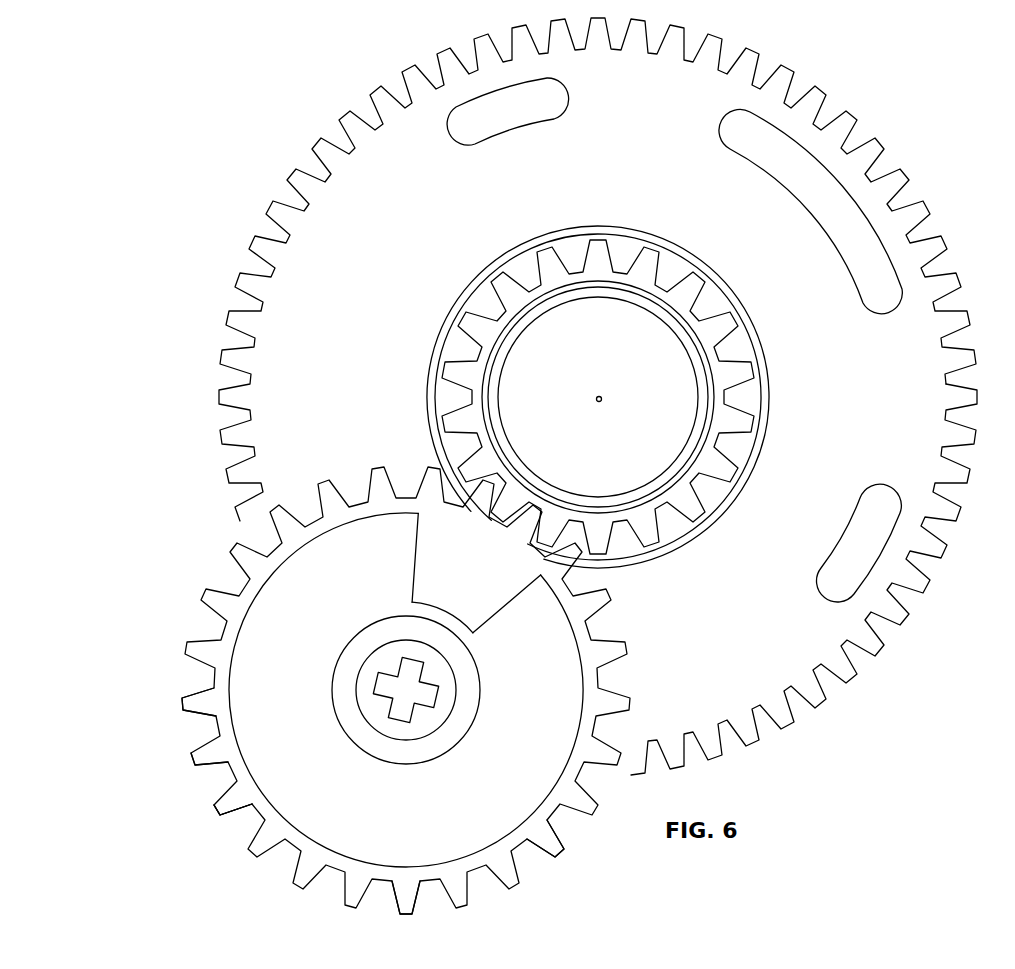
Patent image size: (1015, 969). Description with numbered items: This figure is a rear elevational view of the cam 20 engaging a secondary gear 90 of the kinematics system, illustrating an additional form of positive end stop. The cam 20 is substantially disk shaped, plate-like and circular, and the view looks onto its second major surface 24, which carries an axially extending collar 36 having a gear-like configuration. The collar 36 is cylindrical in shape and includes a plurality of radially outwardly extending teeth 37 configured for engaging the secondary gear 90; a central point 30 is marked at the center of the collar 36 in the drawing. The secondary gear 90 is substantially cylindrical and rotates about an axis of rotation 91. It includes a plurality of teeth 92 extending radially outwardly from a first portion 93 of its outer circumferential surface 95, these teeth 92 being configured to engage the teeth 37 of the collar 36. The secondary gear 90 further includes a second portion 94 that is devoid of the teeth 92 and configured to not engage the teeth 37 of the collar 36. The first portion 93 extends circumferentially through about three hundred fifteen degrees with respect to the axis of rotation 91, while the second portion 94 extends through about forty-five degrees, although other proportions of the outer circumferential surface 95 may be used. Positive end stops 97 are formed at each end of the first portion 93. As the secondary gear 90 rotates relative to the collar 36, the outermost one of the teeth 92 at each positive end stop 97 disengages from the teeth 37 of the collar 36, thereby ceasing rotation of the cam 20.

The cam 20 is at (922, 189).
The second major surface 24 is at (406, 237).
The axis of rotation 30 is at (601, 397).
The collar 36 is at (668, 281).
The teeth 37 is at (688, 493).
The secondary gear 90 is at (192, 634).
The axis of rotation 91 is at (407, 692).
The teeth 92 is at (195, 764).
The first portion 93 is at (176, 712).
The second portion 94 is at (292, 860).
The outer circumferential surface 95 is at (535, 850).
The positive end stops 97 is at (228, 823).